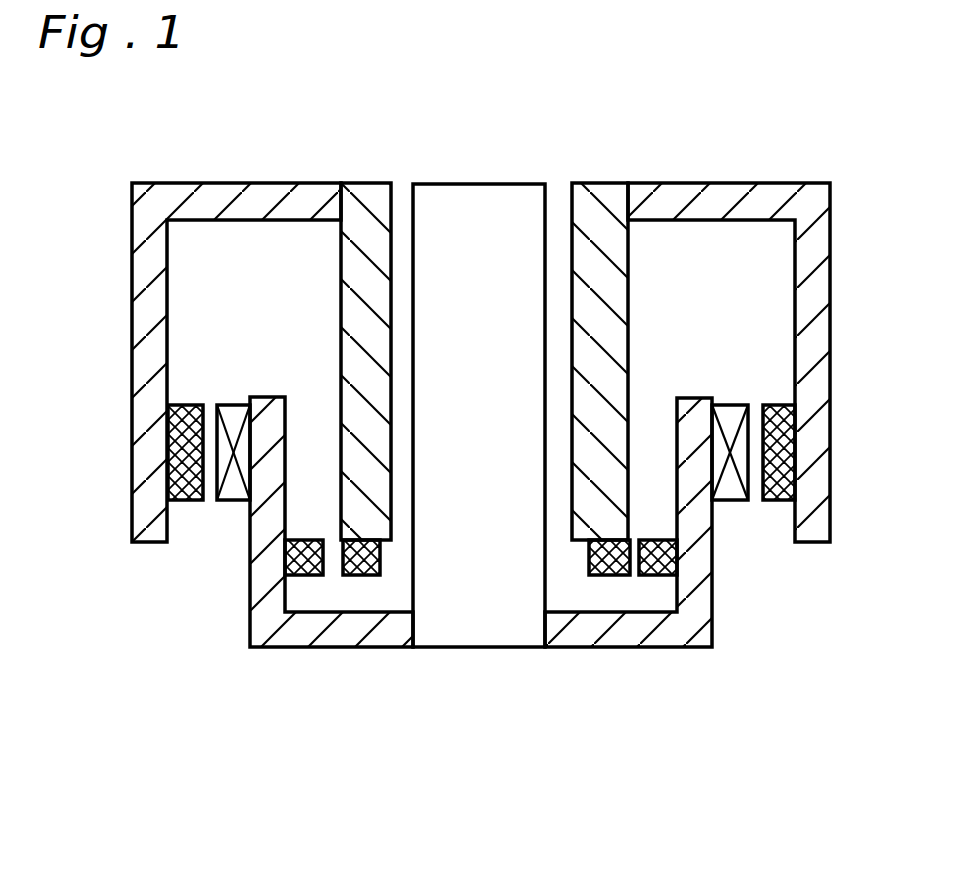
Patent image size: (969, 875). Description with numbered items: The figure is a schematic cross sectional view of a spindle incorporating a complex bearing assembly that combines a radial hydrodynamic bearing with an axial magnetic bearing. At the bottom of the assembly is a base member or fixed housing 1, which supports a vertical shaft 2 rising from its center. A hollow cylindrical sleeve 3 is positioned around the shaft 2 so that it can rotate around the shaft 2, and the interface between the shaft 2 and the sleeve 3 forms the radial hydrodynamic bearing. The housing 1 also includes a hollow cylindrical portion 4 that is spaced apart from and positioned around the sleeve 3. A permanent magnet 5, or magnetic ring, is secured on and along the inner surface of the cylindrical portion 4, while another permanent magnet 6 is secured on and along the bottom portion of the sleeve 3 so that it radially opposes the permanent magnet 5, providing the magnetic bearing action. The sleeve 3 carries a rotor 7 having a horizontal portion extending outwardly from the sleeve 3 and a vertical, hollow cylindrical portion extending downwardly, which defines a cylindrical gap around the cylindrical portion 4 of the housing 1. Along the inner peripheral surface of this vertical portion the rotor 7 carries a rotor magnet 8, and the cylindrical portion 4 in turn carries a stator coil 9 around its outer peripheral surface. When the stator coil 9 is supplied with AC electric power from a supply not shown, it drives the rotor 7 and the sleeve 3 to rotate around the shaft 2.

The fixed housing 1 is at (606, 637).
The vertical shaft 2 is at (473, 628).
The hollow cylindrical sleeve 3 is at (360, 318).
The hollow cylindrical portion 4 is at (258, 527).
The permanent magnet 5 is at (302, 577).
The permanent magnet 6 is at (362, 576).
The rotor 7 is at (272, 196).
The rotor magnet 8 is at (790, 430).
The stator coil 9 is at (727, 488).